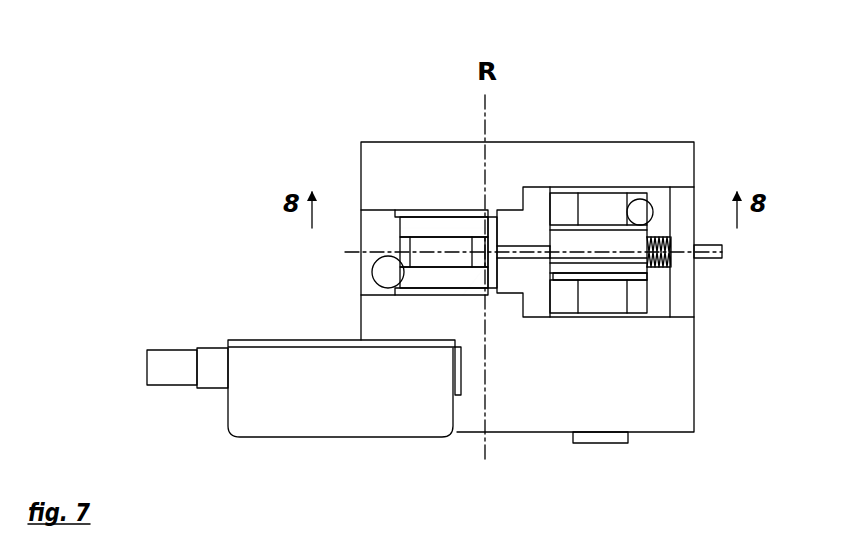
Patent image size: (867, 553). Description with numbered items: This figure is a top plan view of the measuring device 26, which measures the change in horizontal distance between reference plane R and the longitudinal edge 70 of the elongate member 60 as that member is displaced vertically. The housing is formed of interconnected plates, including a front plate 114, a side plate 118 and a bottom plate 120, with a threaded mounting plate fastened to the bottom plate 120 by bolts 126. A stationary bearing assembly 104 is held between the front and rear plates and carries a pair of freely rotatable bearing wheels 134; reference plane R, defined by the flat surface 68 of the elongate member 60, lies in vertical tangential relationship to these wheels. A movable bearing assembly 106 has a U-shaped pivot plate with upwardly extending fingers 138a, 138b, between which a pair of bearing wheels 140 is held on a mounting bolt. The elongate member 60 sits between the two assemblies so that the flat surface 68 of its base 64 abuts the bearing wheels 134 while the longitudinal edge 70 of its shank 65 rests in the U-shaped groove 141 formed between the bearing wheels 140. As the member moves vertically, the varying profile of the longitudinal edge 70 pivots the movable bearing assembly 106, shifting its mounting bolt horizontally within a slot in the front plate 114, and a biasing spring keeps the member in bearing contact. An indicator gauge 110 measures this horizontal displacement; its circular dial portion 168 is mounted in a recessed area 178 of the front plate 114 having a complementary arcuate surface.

The measuring device 26 is at (718, 121).
The elongate member 60 is at (488, 237).
The base 64 is at (492, 290).
The shank 65 is at (528, 258).
The flat surface 68 is at (470, 386).
The longitudinal edge 70 is at (547, 252).
The stationary bearing assembly 104 is at (405, 182).
The movable bearing assembly 106 is at (690, 276).
The indicator gauge 110 is at (202, 420).
The front plate 114 is at (683, 418).
The side plate 118 is at (687, 266).
The bottom plate 120 is at (663, 210).
The bolts 126 is at (384, 273).
The bearing wheels 134 is at (407, 275).
The finger 138a is at (637, 213).
The finger 138b is at (627, 300).
The bearing wheels 140 is at (651, 268).
The U-shaped groove 141 is at (552, 252).
The dial portion 168 is at (352, 437).
The recessed area 178 is at (387, 338).